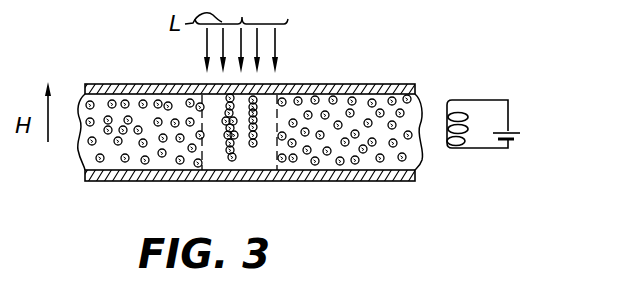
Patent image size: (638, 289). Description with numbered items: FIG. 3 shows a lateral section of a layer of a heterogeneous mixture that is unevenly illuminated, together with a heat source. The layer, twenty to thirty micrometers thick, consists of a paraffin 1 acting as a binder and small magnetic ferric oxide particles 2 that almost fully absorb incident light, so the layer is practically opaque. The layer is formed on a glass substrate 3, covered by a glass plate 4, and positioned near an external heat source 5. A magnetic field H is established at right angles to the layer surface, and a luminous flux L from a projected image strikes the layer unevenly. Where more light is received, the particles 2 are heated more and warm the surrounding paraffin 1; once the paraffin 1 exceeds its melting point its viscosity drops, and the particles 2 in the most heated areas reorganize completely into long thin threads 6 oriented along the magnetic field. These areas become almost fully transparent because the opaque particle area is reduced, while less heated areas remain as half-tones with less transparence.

The paraffin 1 is at (114, 161).
The particles 2 is at (124, 100).
The glass substrate 3 is at (409, 176).
The glass plate 4 is at (375, 83).
The external heat source 5 is at (496, 82).
The long thin threads 6 is at (255, 147).